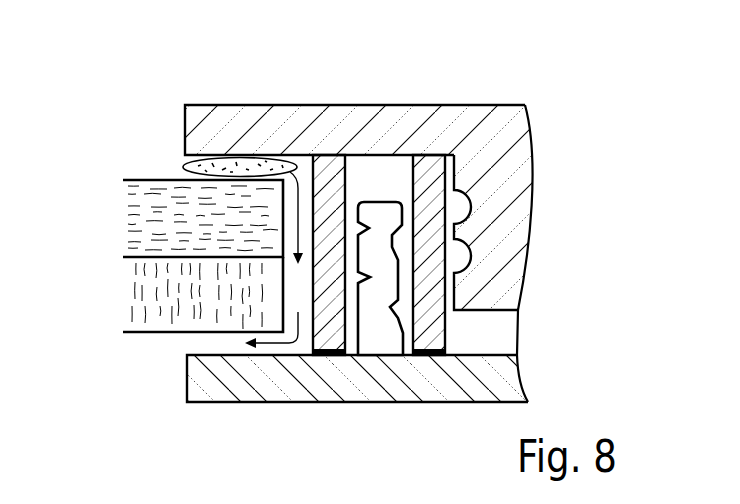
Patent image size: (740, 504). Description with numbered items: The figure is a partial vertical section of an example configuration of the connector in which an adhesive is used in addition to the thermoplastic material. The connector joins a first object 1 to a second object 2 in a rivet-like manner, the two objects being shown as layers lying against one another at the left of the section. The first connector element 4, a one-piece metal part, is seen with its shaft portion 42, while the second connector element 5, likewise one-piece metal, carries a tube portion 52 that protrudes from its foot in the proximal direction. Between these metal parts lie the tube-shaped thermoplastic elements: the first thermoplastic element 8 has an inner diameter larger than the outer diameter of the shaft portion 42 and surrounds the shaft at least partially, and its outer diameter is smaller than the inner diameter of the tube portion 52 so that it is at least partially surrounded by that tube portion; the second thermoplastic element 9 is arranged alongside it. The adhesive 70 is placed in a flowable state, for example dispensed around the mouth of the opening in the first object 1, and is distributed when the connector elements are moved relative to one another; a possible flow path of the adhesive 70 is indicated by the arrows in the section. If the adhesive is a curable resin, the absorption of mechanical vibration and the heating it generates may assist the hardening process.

The first object 1 is at (190, 218).
The second object 2 is at (190, 292).
The first connector element 4 is at (437, 132).
The shaft portion 42 is at (503, 227).
The second connector element 5 is at (355, 373).
The first thermoplastic element 8 is at (425, 202).
The second thermoplastic element 9 is at (330, 193).
The tube portion 52 is at (374, 256).
The adhesive 70 is at (197, 167).